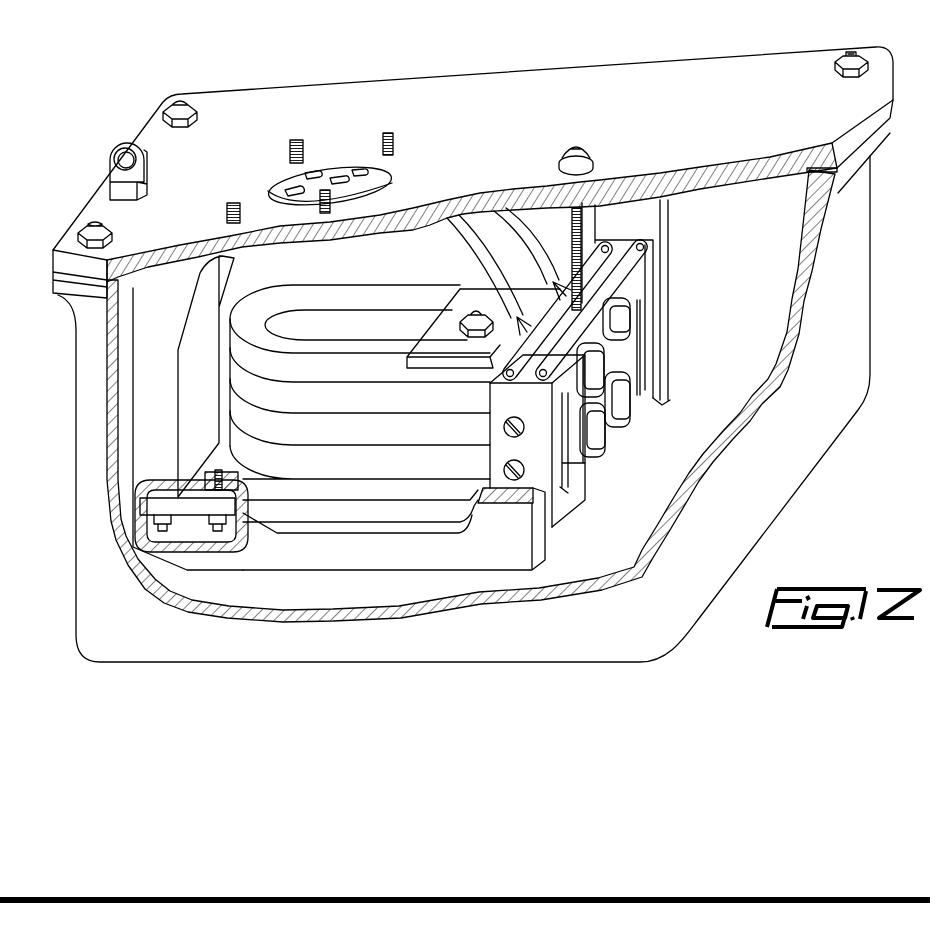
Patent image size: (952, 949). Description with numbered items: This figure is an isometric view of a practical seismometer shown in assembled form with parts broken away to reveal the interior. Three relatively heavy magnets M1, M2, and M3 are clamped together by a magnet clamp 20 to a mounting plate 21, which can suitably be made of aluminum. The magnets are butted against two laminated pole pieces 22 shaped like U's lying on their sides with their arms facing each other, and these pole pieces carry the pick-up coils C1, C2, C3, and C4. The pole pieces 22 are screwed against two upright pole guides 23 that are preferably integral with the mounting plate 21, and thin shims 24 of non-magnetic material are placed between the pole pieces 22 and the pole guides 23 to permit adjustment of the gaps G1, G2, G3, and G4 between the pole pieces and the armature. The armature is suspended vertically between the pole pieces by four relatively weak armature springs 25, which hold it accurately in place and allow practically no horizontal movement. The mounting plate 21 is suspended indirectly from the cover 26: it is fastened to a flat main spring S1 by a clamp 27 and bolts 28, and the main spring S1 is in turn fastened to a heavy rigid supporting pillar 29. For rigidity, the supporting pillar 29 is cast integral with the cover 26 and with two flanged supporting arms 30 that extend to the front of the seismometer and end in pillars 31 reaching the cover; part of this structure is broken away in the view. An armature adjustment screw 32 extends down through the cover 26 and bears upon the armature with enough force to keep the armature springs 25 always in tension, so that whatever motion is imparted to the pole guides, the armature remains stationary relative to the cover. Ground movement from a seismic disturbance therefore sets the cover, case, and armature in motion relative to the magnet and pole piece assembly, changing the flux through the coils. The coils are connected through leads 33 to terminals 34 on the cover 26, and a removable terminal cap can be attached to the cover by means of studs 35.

The magnet clamp 20 is at (478, 298).
The mounting plate 21 is at (360, 443).
The laminated pole pieces 22 is at (637, 337).
The pole guides 23 is at (653, 270).
The shims 24 is at (610, 380).
The armature springs 25 is at (640, 262).
The cover 26 is at (247, 95).
The clamp 27 is at (200, 512).
The bolts 28 is at (222, 527).
The supporting pillar 29 is at (185, 376).
The flanged supporting arms 30 is at (412, 560).
The pillars 31 is at (662, 218).
The armature adjustment screw 32 is at (573, 235).
The leads 33 is at (537, 248).
The terminals 34 is at (337, 170).
The studs 35 is at (227, 208).
The magnet M1 is at (360, 381).
The magnet M2 is at (360, 412).
The magnet M3 is at (360, 445).
The pick-up coil C1 is at (593, 380).
The pick-up coil C2 is at (573, 463).
The pick-up coil C3 is at (625, 318).
The pick-up coil C4 is at (627, 410).
The gap G1 is at (597, 353).
The gap G2 is at (640, 455).
The gap G3 is at (612, 333).
The gap G4 is at (613, 423).
The main spring S1 is at (200, 505).